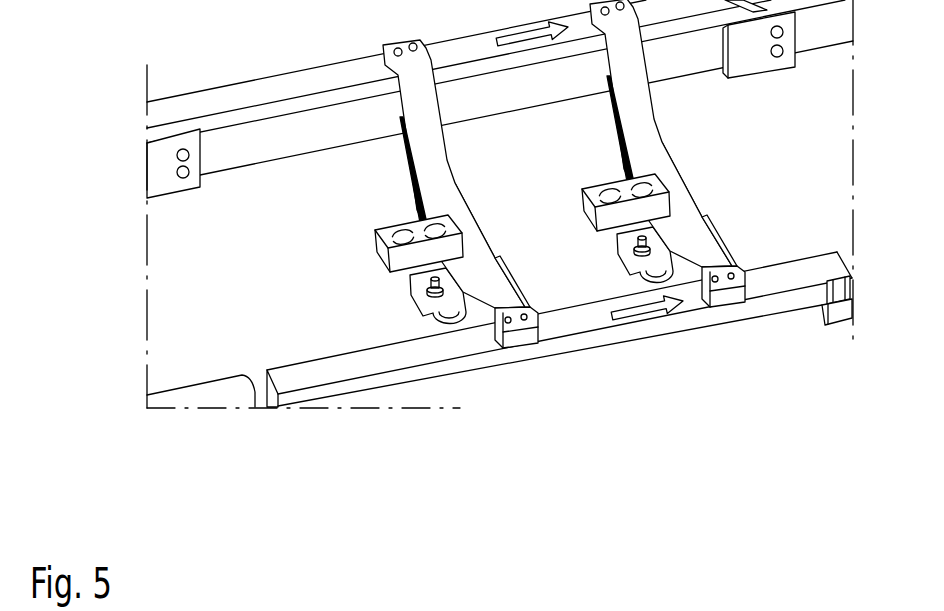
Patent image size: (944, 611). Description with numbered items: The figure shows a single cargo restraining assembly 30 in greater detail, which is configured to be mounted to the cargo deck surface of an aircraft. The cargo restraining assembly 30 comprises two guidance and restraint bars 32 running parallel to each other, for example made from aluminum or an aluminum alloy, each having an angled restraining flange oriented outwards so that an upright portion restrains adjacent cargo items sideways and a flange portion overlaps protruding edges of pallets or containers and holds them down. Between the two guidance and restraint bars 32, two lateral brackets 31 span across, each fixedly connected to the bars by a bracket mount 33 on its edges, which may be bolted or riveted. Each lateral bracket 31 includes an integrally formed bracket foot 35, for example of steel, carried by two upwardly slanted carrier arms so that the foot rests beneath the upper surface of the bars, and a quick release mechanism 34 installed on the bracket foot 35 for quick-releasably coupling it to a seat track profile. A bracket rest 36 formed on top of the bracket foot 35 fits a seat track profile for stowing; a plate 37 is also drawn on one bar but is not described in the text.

The cargo restraining assembly 30 is at (195, 450).
The lateral bracket 31 is at (433, 191).
The guidance and restraint bar 32 is at (292, 86).
The bracket mount 33 is at (523, 327).
The quick release mechanism 34 is at (452, 238).
The bracket foot 35 is at (507, 275).
The bracket rest 36 is at (375, 234).
The connecting plate 37 is at (748, 63).